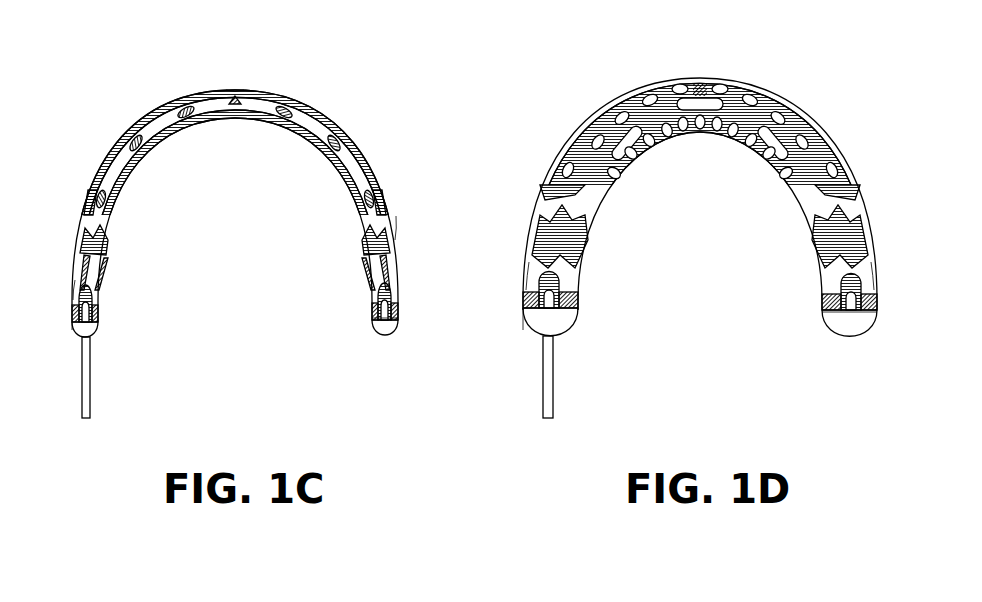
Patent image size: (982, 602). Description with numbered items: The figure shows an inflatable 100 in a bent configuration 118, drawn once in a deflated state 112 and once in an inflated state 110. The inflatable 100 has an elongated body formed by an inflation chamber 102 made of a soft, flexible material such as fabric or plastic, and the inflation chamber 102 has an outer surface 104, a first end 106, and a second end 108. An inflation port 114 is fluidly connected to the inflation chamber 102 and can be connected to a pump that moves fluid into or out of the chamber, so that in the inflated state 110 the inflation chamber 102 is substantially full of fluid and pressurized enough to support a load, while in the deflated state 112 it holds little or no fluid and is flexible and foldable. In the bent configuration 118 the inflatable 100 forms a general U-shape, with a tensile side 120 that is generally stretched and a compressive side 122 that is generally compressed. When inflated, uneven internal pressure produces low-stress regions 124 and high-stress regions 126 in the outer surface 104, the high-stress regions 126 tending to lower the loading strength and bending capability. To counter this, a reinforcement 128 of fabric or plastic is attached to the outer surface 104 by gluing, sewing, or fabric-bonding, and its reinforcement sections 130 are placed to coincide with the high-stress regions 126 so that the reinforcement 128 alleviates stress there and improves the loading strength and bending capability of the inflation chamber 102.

In FIG. 1C, the inflatable 100 is at (72, 330).
In FIG. 1D, the inflatable 100 is at (523, 330).
In FIG. 1C, the inflation chamber 102 is at (73, 320).
In FIG. 1D, the inflation chamber 102 is at (523, 320).
In FIG. 1C, the outer surface 104 is at (73, 290).
In FIG. 1D, the outer surface 104 is at (532, 278).
In FIG. 1C, the first end 106 is at (92, 328).
In FIG. 1D, the first end 106 is at (557, 325).
In FIG. 1C, the second end 108 is at (390, 345).
In FIG. 1D, the second end 108 is at (848, 338).
In FIG. 1D, the inflated state 110 is at (878, 283).
In FIG. 1C, the deflated state 112 is at (380, 222).
In FIG. 1C, the inflation port 114 is at (90, 355).
In FIG. 1D, the inflation port 114 is at (553, 350).
In FIG. 1C, the bent configuration 118 is at (355, 288).
In FIG. 1D, the bent configuration 118 is at (815, 286).
In FIG. 1C, the tensile side 120 is at (234, 88).
In FIG. 1D, the tensile side 120 is at (700, 78).
In FIG. 1C, the compressive side 122 is at (235, 124).
In FIG. 1D, the compressive side 122 is at (700, 132).
In FIG. 1C, the low-stress regions 124 is at (110, 222).
In FIG. 1D, the low-stress regions 124 is at (590, 208).
In FIG. 1C, the high-stress regions 126 is at (114, 168).
In FIG. 1D, the high-stress regions 126 is at (585, 140).
In FIG. 1C, the reinforcement 128 is at (283, 96).
In FIG. 1D, the reinforcement 128 is at (740, 80).
In FIG. 1C, the reinforcement sections 130 is at (157, 118).
In FIG. 1D, the reinforcement sections 130 is at (643, 95).